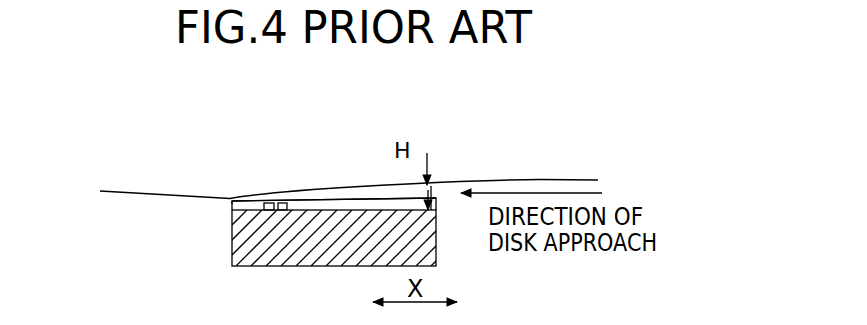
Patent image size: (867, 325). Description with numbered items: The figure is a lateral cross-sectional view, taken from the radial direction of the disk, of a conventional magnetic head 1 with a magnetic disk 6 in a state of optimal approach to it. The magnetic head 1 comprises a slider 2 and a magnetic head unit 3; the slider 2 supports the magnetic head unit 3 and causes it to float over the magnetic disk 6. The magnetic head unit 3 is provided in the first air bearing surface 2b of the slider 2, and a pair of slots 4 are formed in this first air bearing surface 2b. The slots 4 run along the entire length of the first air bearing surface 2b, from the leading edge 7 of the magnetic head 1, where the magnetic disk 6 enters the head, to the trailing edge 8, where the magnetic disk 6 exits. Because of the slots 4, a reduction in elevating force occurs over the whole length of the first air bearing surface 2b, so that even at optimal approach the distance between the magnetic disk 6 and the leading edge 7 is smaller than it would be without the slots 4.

The magnetic head 1 is at (324, 222).
The slider 2 is at (300, 257).
The first air bearing surface 2b is at (354, 198).
The magnetic head unit 3 is at (270, 203).
The slots 4 is at (312, 200).
The magnetic disk 6 is at (534, 179).
The leading edge 7 is at (431, 187).
The trailing edge 8 is at (231, 200).